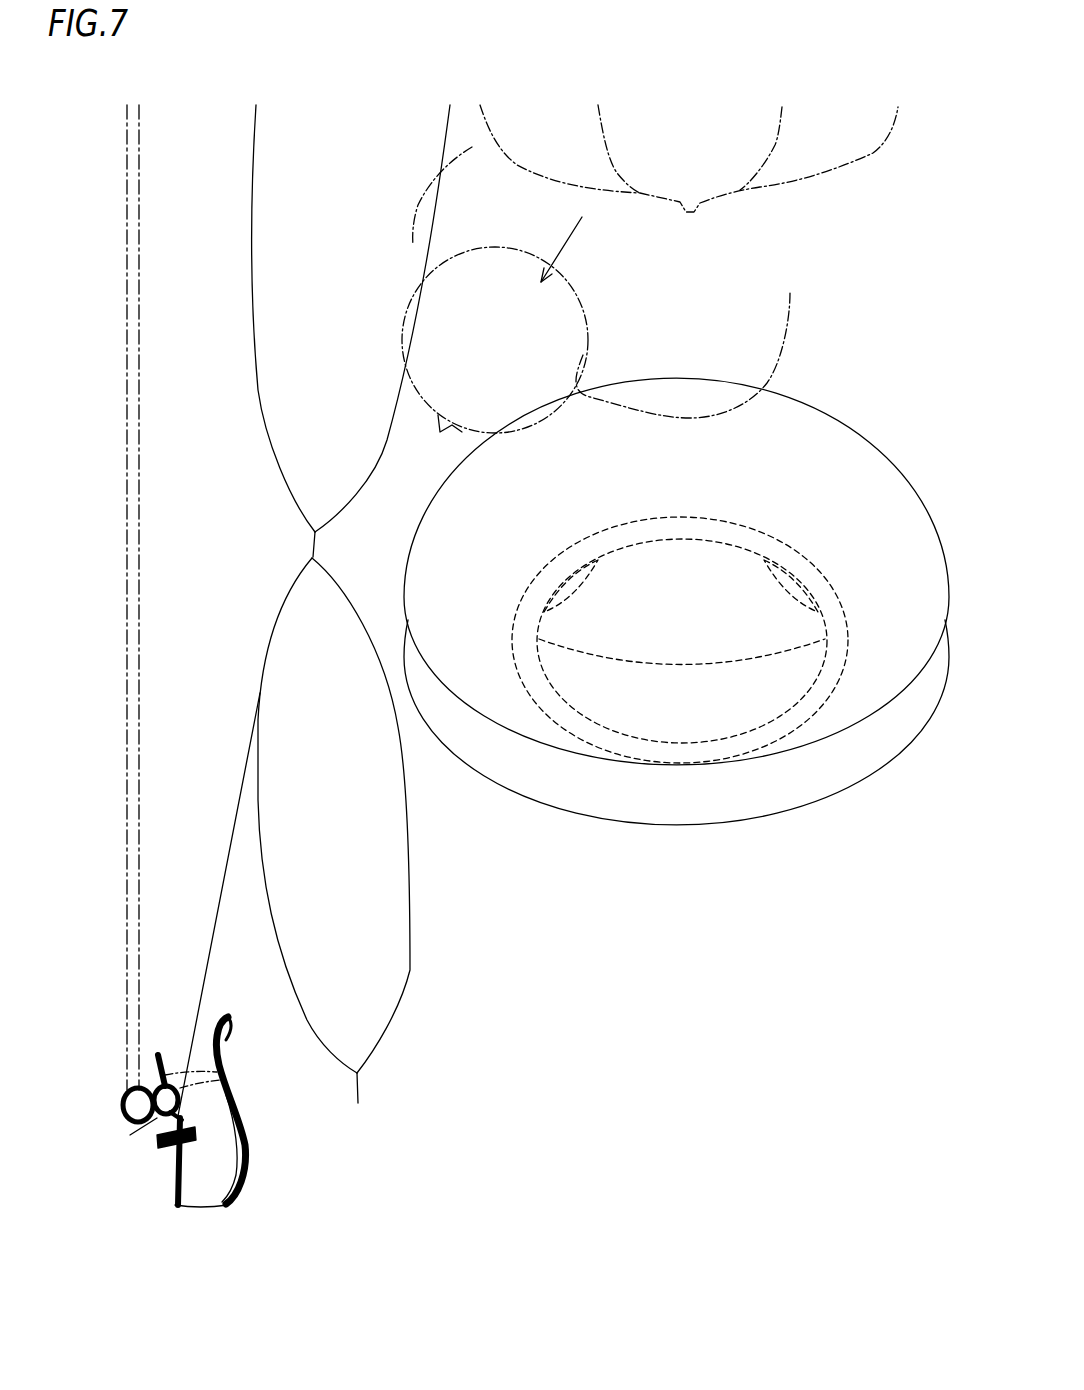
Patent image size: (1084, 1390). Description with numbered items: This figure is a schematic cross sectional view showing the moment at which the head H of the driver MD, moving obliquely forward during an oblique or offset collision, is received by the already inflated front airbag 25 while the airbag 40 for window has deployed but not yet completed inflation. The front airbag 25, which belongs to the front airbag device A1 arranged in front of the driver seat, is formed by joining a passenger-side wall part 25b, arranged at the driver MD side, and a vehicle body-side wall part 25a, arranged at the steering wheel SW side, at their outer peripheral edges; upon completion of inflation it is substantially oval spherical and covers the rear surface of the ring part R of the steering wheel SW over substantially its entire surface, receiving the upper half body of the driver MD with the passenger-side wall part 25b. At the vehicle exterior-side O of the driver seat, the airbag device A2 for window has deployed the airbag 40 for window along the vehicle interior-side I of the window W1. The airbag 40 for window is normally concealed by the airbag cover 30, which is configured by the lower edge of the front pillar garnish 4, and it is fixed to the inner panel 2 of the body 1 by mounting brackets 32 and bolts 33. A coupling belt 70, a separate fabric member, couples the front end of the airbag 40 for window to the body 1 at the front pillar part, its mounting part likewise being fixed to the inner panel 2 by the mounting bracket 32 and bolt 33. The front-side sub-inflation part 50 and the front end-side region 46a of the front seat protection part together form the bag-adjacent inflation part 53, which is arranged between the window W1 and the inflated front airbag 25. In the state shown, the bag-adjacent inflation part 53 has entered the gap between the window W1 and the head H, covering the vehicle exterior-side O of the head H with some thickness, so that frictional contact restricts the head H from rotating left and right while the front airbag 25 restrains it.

The body 1 is at (175, 1205).
The inner panel 2 is at (190, 1252).
The front pillar garnish 4 is at (240, 1178).
The front airbag 25 is at (676, 602).
The vehicle body-side wall part 25a is at (581, 800).
The passenger-side wall part 25b is at (865, 460).
The airbag cover 30 is at (227, 1060).
The mounting bracket 32 is at (193, 1150).
The bolt 33 is at (163, 1145).
The airbag for window 40 is at (328, 1094).
The front end-side region of the front seat protection part 46a is at (273, 427).
The front-side sub-inflation part 50 is at (407, 980).
The bag-adjacent inflation part 53 is at (284, 553).
The coupling belt 70 is at (208, 953).
The front airbag device A1 is at (676, 838).
The airbag device for window A2 is at (393, 1157).
The head H is at (587, 337).
The driver MD is at (797, 123).
The ring part R is at (838, 688).
The steering wheel SW is at (783, 743).
The window W1 is at (127, 807).
The vehicle exterior-side O is at (130, 1340).
The vehicle interior-side I is at (940, 1340).